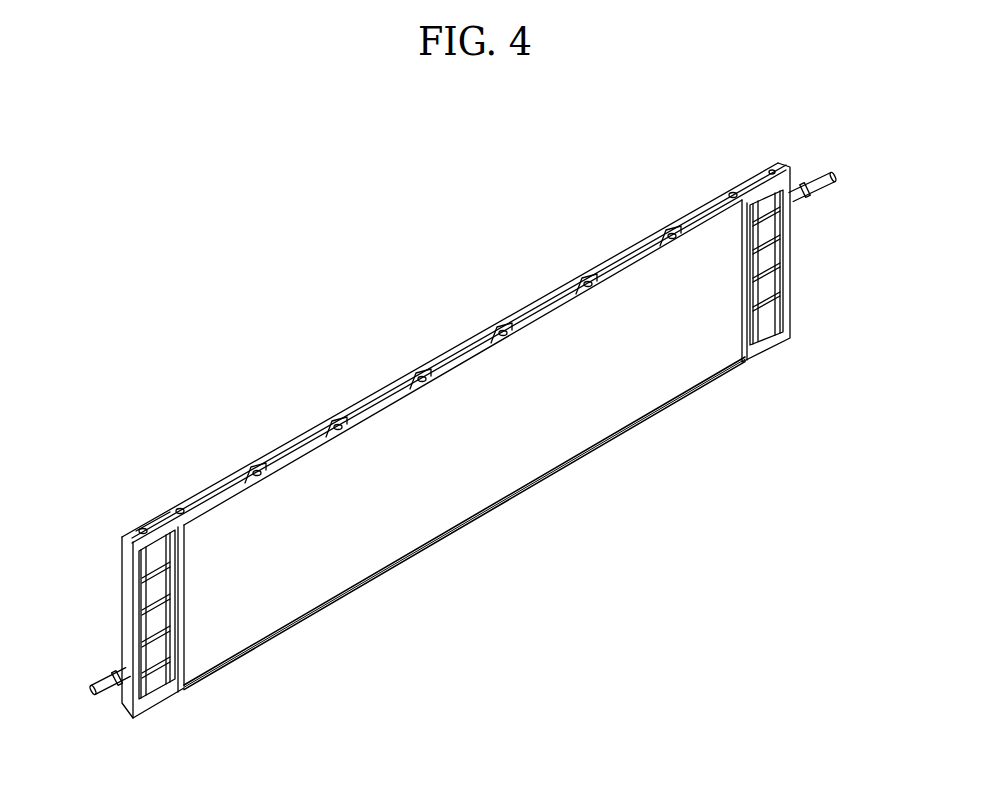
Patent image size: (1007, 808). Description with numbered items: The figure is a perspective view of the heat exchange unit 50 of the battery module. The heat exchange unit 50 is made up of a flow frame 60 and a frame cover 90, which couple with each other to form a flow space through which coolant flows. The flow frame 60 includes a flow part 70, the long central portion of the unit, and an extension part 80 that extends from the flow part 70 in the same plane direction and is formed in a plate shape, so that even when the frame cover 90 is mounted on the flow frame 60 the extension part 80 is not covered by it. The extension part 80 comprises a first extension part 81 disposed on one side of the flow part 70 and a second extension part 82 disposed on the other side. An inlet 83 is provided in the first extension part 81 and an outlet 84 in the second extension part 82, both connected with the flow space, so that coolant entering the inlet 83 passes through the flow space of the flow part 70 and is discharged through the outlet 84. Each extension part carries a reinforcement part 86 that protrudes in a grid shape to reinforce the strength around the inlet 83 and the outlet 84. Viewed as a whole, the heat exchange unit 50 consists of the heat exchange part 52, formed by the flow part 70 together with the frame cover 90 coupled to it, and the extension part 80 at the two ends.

The heat exchange unit 50 is at (478, 415).
The heat exchange part 52 is at (534, 500).
The flow frame 60 is at (146, 517).
The flow part 70 is at (257, 466).
The extension part 80 is at (491, 440).
The first extension part 81 is at (197, 622).
The second extension part 82 is at (772, 264).
The inlet 83 is at (104, 686).
The outlet 84 is at (820, 194).
The reinforcement part 86 is at (160, 598).
The frame cover 90 is at (335, 590).